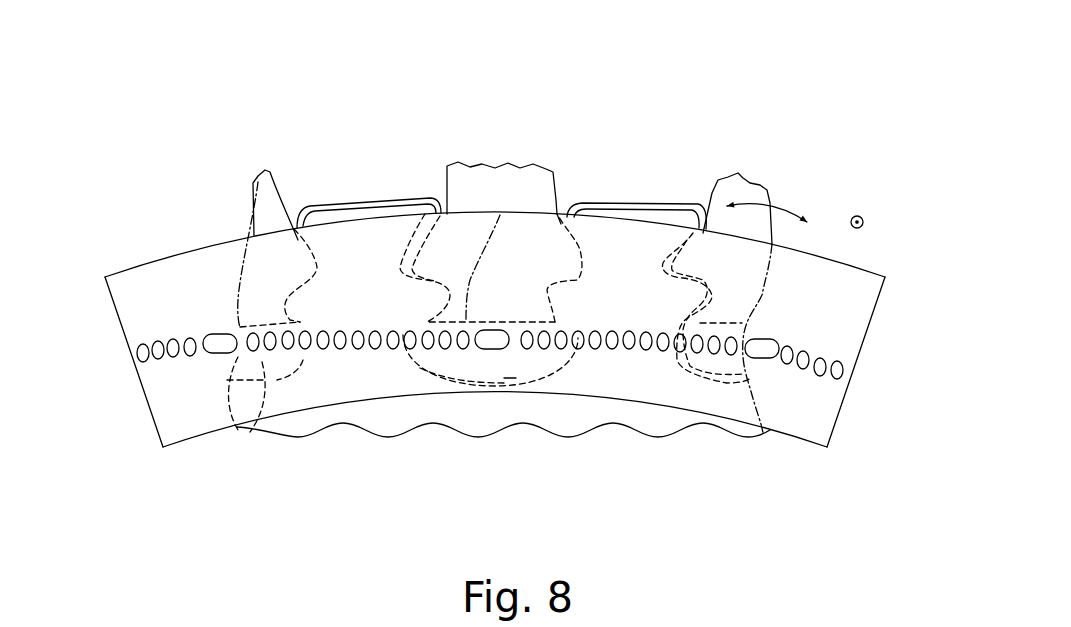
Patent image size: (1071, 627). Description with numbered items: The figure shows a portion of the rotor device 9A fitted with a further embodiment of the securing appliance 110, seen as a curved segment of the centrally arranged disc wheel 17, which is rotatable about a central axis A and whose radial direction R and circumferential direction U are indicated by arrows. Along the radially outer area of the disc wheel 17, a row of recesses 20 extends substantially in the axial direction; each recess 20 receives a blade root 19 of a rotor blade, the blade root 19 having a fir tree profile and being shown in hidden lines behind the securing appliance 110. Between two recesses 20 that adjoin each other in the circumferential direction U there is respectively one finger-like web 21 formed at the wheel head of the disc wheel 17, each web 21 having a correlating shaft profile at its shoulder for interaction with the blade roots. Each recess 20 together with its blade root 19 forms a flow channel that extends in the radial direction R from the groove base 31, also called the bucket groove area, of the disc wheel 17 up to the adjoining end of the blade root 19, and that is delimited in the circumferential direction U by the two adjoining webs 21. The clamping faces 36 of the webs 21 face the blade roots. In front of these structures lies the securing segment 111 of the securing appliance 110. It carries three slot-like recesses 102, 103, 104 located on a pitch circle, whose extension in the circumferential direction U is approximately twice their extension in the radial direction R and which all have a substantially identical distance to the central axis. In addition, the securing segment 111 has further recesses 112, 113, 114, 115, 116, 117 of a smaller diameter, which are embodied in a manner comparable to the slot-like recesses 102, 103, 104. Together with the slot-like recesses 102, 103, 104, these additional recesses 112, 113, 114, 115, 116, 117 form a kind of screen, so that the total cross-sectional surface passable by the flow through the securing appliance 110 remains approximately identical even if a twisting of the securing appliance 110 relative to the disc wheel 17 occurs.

The rotor device 9A is at (121, 203).
The securing appliance 110 is at (497, 300).
The securing segment 111 is at (150, 262).
The recess 112 is at (160, 340).
The recess 117 is at (807, 350).
The disc wheel 17 is at (327, 432).
The blade root 19 is at (255, 182).
The recess 20 is at (500, 215).
The finger-like web 21 is at (320, 207).
The clamping surface 36 is at (360, 202).
The groove base 31 is at (511, 380).
The slot-like recess 102 is at (215, 352).
The slot-like recess 103 is at (474, 349).
The slot-like recess 104 is at (762, 358).
The recess 113 is at (255, 337).
The recess 114 is at (408, 338).
The recess 115 is at (578, 337).
The recess 116 is at (733, 335).
The radial direction R is at (413, 118).
The circumferential direction U is at (770, 203).
The axis of rotation A is at (863, 217).